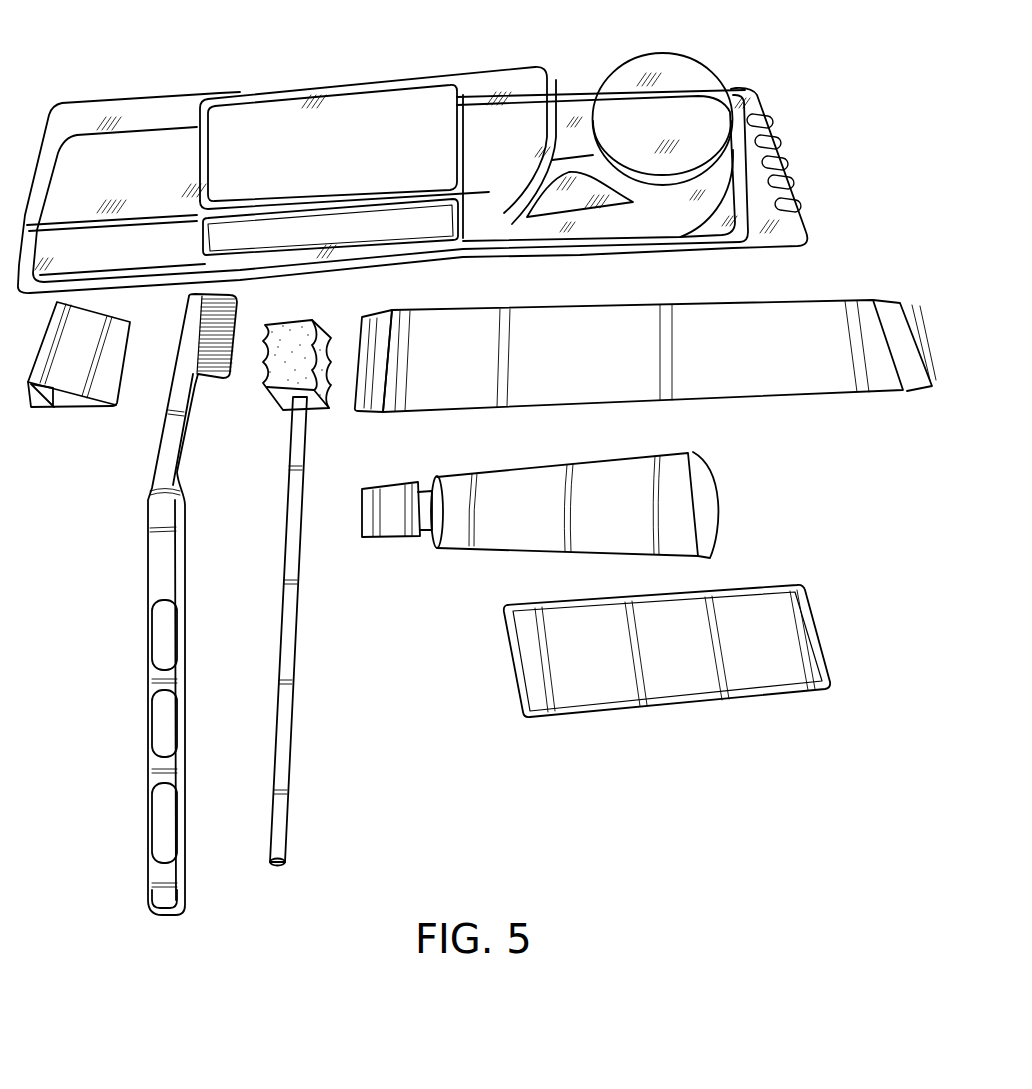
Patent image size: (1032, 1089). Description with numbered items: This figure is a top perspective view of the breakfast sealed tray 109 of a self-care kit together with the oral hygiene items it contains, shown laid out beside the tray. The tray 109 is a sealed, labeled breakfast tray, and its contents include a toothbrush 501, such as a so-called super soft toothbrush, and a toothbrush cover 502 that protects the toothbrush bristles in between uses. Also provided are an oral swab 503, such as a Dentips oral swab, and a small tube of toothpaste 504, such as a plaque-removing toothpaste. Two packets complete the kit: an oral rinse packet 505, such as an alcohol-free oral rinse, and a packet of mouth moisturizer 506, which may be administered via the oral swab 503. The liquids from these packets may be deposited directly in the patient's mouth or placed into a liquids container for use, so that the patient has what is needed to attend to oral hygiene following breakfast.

The breakfast sealed tray 109 is at (92, 108).
The toothbrush 501 is at (157, 565).
The toothbrush cover 502 is at (78, 405).
The oral swab 503 is at (293, 530).
The tube of toothpaste 504 is at (703, 507).
The oral rinse packet 505 is at (863, 310).
The packet of mouth moisturizer 506 is at (688, 682).